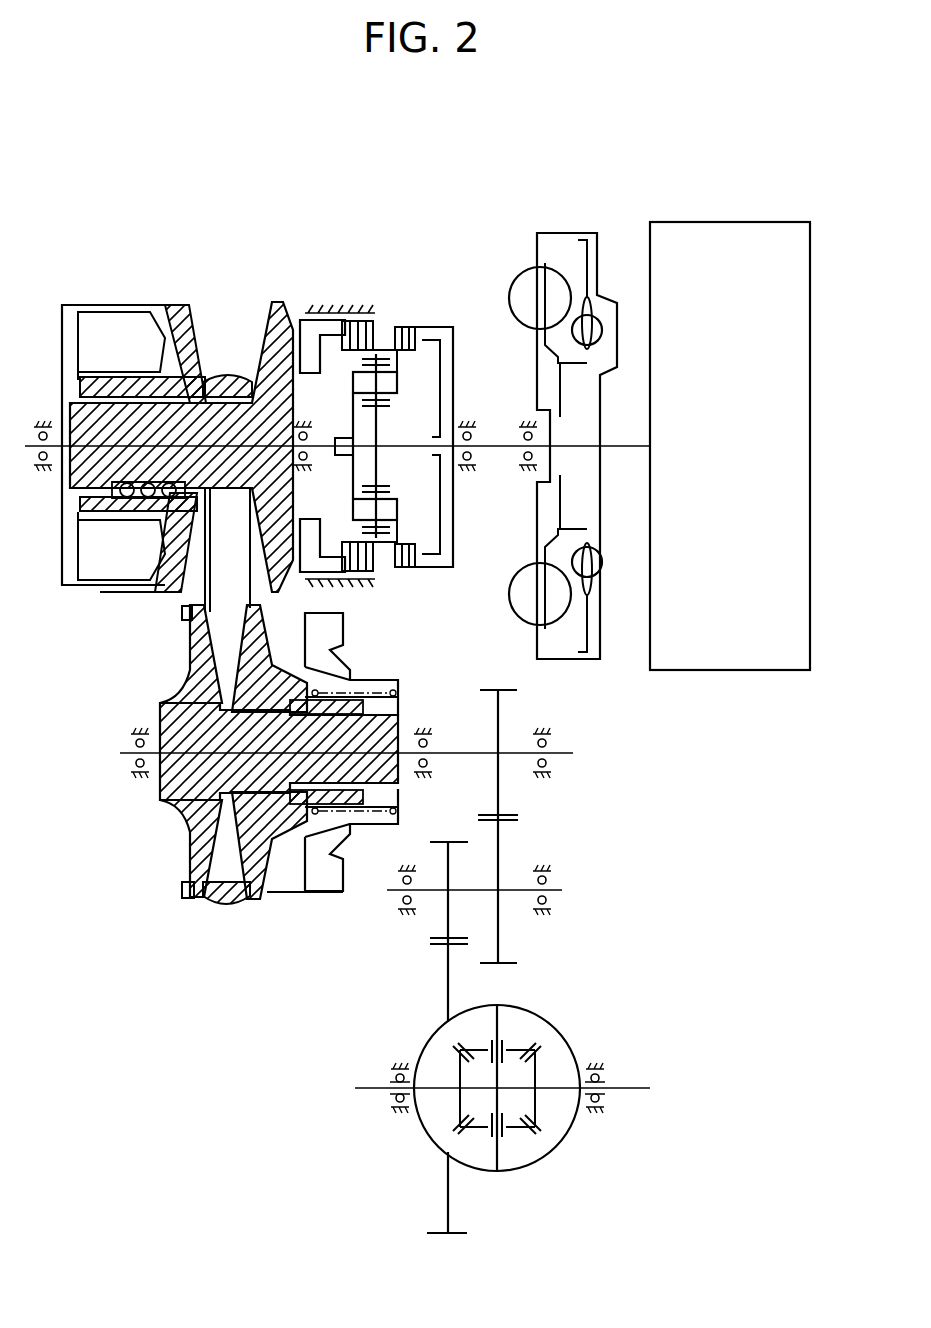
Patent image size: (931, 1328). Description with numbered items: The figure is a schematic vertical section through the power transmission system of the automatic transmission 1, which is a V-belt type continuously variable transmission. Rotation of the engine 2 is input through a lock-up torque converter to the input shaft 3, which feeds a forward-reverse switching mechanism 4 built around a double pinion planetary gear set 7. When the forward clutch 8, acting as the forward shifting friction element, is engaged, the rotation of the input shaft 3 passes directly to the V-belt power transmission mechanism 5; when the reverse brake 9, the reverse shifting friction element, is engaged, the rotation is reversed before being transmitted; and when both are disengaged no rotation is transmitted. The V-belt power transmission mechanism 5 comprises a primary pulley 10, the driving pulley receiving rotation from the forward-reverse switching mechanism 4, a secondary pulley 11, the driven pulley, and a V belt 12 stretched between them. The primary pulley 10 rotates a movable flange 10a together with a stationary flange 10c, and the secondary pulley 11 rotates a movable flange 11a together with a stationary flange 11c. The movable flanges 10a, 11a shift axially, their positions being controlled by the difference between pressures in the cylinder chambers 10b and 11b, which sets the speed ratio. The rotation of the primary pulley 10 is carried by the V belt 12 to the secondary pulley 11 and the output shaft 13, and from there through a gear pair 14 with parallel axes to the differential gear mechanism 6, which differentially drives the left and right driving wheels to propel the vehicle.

The automatic transmission 1 is at (460, 202).
The engine 2 is at (722, 221).
The input shaft 3 is at (500, 445).
The forward-reverse switching mechanism 4 is at (387, 308).
The V-belt power transmission mechanism 5 is at (207, 298).
The differential gear mechanism 6 is at (569, 1034).
The double pinion planetary gear set 7 is at (398, 512).
The forward clutch 8 is at (406, 325).
The reverse brake 9 is at (357, 319).
The primary pulley 10 is at (267, 314).
The movable flange 10a is at (188, 308).
The cylinder chamber 10b is at (102, 323).
The stationary flange 10c is at (278, 300).
The secondary pulley 11 is at (188, 869).
The movable flange 11a is at (262, 899).
The cylinder chamber 11b is at (287, 880).
The stationary flange 11c is at (192, 899).
The V belt 12 is at (230, 372).
The output shaft 13 is at (457, 751).
The gear pair 14 is at (530, 839).